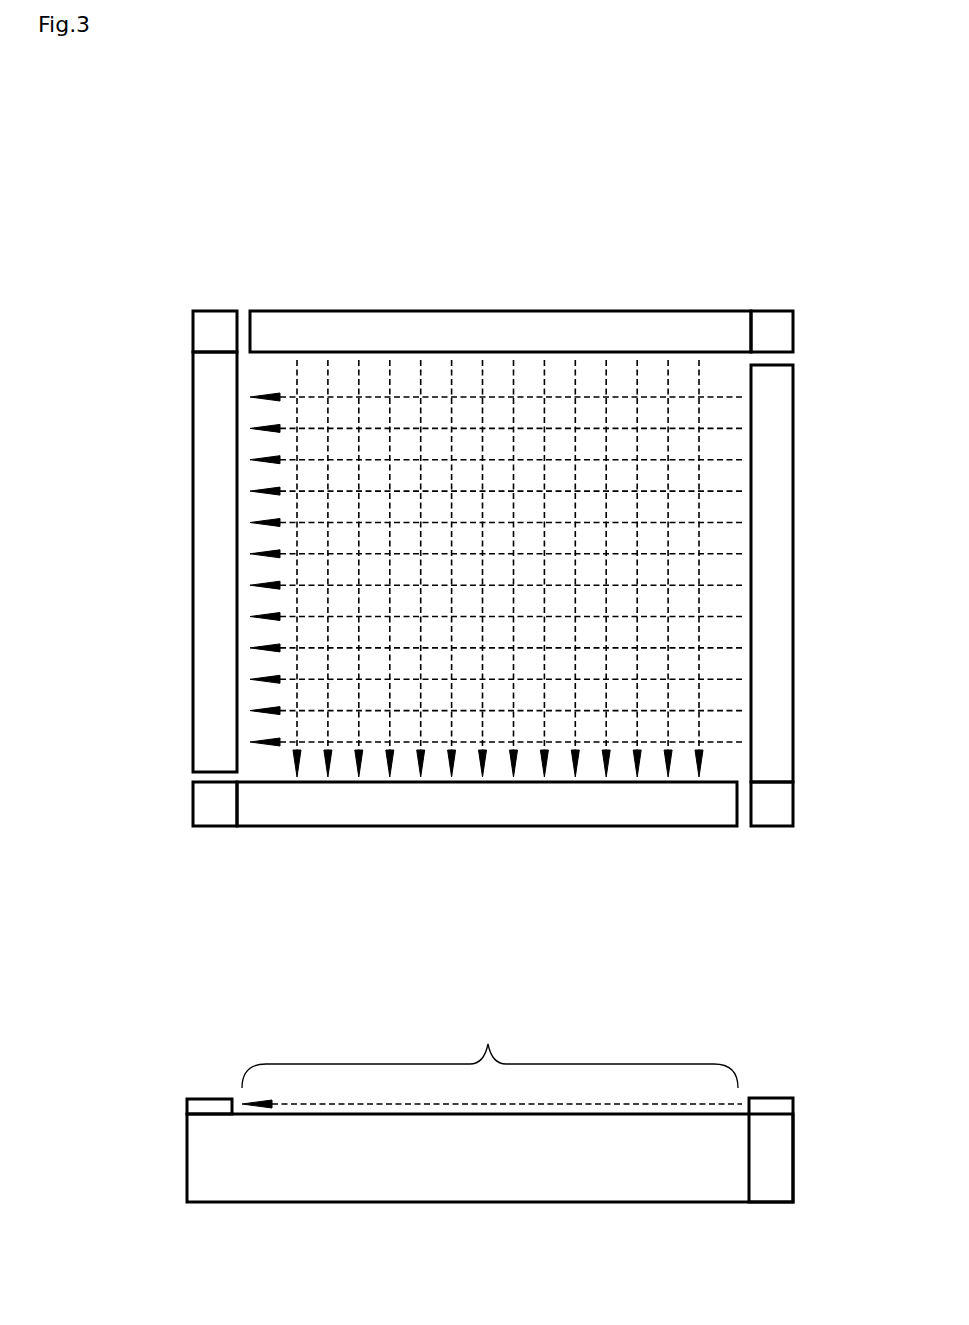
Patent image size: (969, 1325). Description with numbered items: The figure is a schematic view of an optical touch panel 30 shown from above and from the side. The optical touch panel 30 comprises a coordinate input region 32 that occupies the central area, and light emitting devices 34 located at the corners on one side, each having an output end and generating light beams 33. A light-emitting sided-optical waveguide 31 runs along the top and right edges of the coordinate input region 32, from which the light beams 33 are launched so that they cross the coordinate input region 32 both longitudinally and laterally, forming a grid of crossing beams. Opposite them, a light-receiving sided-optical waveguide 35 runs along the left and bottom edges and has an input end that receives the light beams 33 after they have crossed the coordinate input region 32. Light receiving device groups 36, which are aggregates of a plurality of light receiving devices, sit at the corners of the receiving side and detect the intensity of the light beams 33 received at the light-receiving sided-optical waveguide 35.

The optical touch panel 30 is at (770, 153).
The light-emitting sided-optical waveguide 31 is at (690, 311).
The coordinate input region 32 is at (495, 568).
The light beams 33 is at (397, 395).
The light emitting device 34 is at (793, 311).
The light-receiving sided-optical waveguide 35 is at (193, 495).
The light receiving device groups 36 is at (194, 310).